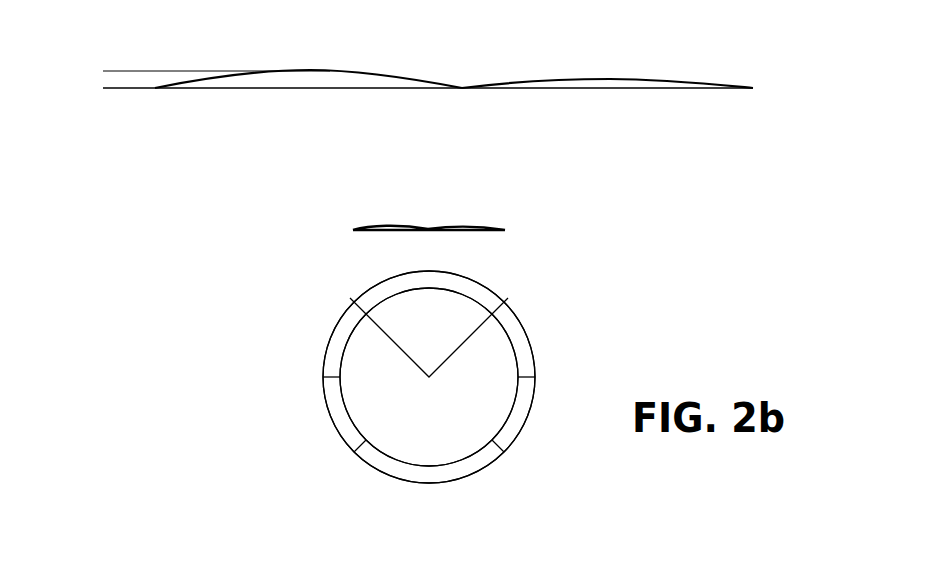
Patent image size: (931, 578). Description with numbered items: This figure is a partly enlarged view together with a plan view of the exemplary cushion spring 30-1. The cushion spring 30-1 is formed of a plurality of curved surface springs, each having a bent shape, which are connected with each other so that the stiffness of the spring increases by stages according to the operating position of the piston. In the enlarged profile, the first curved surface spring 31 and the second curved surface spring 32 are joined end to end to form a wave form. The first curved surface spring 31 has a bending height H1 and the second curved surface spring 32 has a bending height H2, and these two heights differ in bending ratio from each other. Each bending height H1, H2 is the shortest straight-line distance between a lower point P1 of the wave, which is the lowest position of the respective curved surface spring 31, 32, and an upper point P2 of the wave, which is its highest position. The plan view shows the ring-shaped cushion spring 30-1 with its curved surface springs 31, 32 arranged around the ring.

The cushion spring 30-1 is at (537, 320).
The first curved surface spring 31 is at (380, 290).
The second curved surface spring 32 is at (467, 285).
The bending height H1 is at (103, 35).
The bending height H2 is at (609, 122).
The lower point of wave P1 is at (158, 99).
The upper point of wave P2 is at (308, 62).